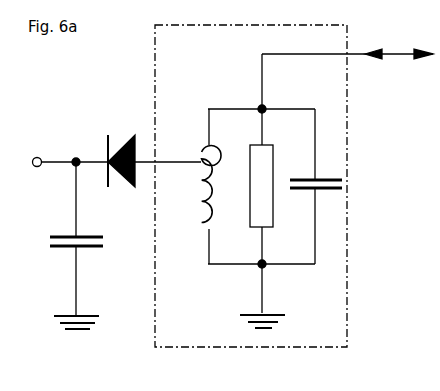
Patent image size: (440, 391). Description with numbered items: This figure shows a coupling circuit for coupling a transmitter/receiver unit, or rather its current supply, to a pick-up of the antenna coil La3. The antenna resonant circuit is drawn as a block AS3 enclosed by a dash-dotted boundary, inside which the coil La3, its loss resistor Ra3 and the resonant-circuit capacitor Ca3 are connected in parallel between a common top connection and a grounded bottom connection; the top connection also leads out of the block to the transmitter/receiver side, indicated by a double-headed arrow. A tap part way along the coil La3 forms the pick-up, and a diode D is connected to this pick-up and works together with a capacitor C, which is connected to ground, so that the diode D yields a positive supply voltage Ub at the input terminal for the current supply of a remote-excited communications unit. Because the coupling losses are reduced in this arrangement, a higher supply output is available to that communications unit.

The supply voltage Ub is at (70, 141).
The diode D is at (154, 143).
The capacitor C is at (63, 245).
The output stage circuit block AS3 is at (294, 203).
The coil La3 is at (196, 186).
The loss resistor Ra3 is at (247, 186).
The capacitor Ca3 is at (307, 186).